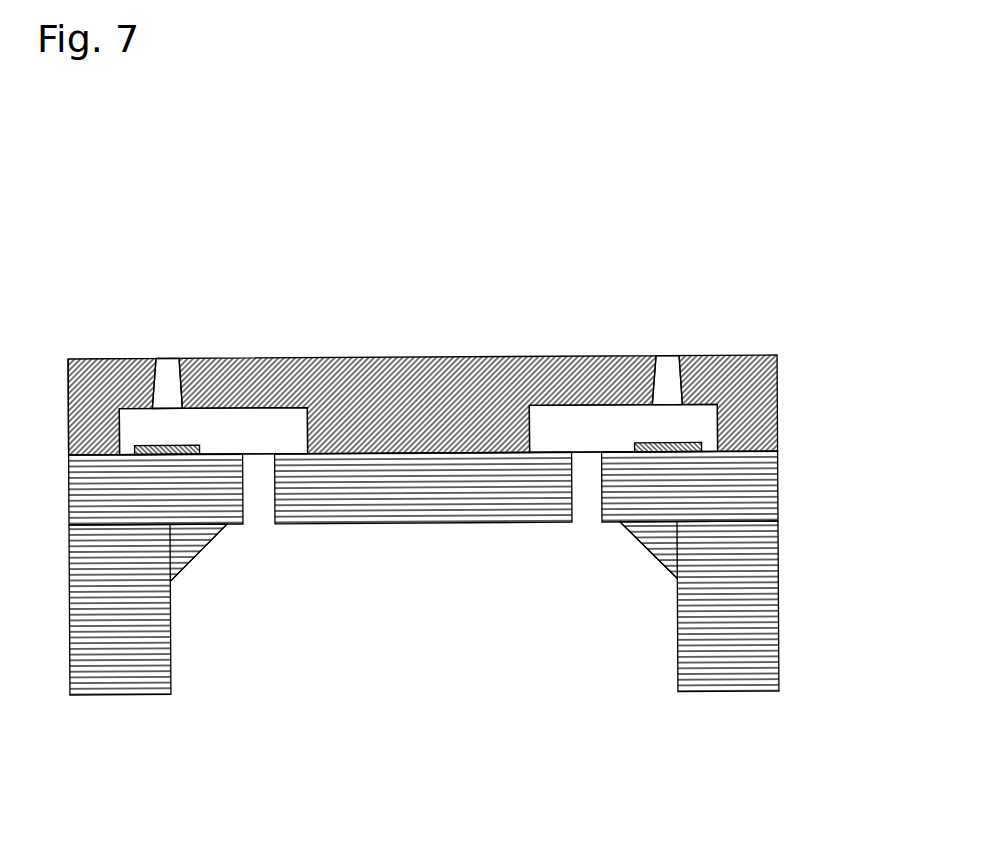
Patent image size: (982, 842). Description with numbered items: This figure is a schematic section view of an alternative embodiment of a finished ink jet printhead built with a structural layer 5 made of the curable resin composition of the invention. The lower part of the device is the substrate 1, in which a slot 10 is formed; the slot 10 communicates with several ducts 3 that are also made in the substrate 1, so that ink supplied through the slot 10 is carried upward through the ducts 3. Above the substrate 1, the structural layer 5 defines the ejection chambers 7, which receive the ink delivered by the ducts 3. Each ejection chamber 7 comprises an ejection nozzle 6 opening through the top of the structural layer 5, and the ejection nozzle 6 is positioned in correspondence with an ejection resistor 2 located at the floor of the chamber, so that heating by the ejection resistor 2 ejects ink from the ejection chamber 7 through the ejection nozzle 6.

The substrate 1 is at (742, 552).
The ejection resistor 2 is at (777, 429).
The ducts 3 is at (588, 530).
The structural layer 5 is at (128, 378).
The ejection nozzle 6 is at (667, 370).
The ejection chambers 7 is at (193, 430).
The slot 10 is at (424, 589).